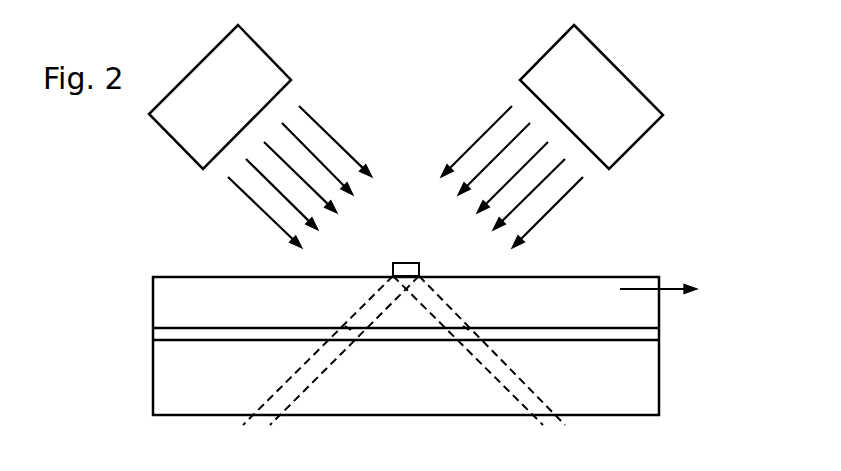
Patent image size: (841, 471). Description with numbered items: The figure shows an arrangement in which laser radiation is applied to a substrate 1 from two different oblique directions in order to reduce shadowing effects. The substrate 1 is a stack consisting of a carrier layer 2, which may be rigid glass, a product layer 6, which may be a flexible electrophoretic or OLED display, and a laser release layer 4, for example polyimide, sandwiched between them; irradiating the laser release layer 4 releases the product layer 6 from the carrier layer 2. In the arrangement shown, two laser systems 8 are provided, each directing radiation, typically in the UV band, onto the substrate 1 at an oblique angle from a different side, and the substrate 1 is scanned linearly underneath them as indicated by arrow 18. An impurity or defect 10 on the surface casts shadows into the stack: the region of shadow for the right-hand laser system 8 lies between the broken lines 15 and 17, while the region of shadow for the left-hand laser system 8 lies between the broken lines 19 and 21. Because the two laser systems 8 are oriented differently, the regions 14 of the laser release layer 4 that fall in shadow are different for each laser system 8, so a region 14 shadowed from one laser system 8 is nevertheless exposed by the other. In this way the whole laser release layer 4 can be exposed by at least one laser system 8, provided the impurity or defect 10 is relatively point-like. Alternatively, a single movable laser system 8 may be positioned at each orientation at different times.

The substrate 1 is at (670, 195).
The carrier layer 2 is at (167, 305).
The laser release layer 4 is at (242, 333).
The product layer 6 is at (173, 380).
The laser system 8 is at (227, 105).
The impurity or defect 10 is at (410, 270).
The regions of the laser release layer in shadow 14 is at (348, 335).
The broken line 15 is at (290, 378).
The broken line 17 is at (343, 352).
The arrow indicating scanning direction 18 is at (675, 285).
The broken line 19 is at (478, 360).
The broken line 21 is at (512, 368).